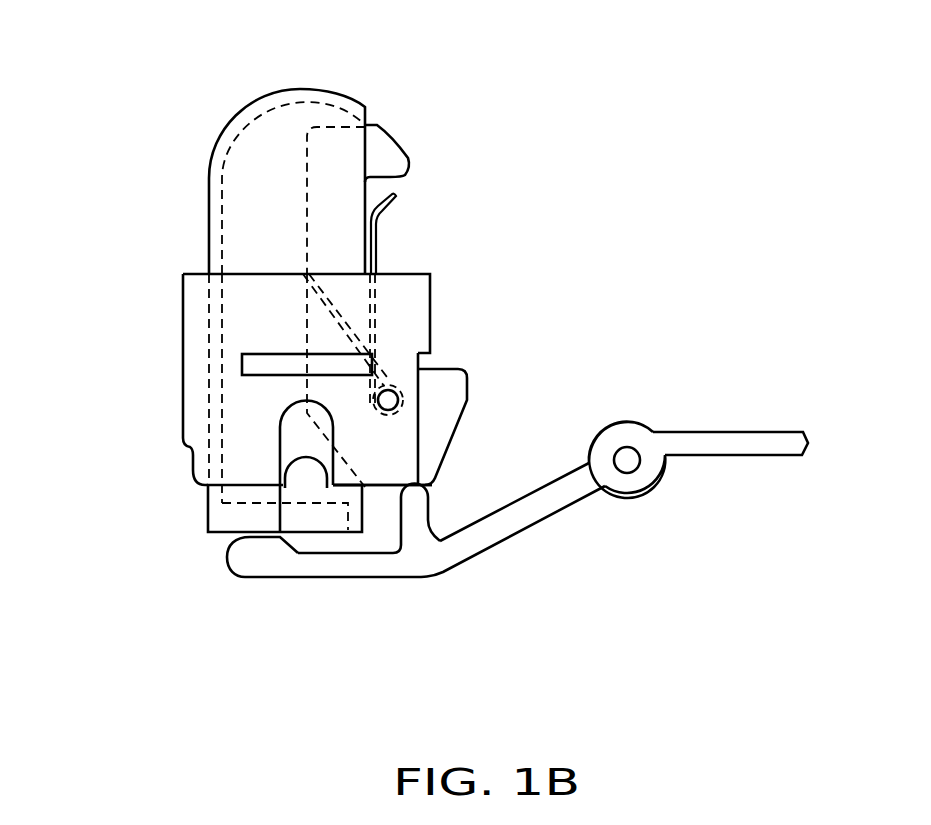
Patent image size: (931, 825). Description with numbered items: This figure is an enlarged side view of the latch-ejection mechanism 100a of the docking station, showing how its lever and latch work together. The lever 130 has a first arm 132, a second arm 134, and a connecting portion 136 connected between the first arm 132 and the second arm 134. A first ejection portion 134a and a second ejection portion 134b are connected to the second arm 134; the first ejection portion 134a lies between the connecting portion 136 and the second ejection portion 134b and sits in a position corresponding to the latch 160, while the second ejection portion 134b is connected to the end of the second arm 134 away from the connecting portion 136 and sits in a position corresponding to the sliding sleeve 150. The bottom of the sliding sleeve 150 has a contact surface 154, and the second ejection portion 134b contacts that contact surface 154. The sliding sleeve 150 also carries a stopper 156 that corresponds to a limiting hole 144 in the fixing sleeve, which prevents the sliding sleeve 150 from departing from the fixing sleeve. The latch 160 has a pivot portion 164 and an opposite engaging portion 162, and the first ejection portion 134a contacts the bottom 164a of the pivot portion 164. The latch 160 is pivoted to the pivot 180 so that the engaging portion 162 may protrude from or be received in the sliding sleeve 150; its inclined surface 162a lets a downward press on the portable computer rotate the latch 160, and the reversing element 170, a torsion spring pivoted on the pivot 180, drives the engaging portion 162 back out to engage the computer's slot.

The latch-ejection mechanism 100a is at (130, 280).
The lever 130 is at (822, 528).
The first arm 132 is at (727, 447).
The second arm 134 is at (533, 513).
The first ejection portion 134a is at (412, 518).
The second ejection portion 134b is at (265, 567).
The connecting portion 136 is at (633, 487).
The limiting hole 144 is at (291, 421).
The sliding sleeve 150 is at (211, 550).
The contact surface 154 is at (253, 520).
The stopper 156 is at (298, 483).
The latch 160 is at (568, 70).
The engaging portion 162 is at (395, 162).
The inclined surface 162a is at (384, 136).
The pivot portion 164 is at (450, 382).
The bottom of the pivot portion 164a is at (381, 492).
The reversing element 170 is at (375, 237).
The pivot 180 is at (390, 400).